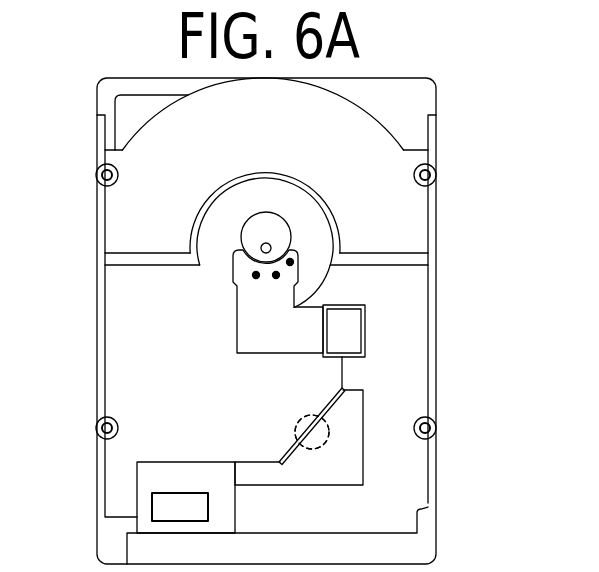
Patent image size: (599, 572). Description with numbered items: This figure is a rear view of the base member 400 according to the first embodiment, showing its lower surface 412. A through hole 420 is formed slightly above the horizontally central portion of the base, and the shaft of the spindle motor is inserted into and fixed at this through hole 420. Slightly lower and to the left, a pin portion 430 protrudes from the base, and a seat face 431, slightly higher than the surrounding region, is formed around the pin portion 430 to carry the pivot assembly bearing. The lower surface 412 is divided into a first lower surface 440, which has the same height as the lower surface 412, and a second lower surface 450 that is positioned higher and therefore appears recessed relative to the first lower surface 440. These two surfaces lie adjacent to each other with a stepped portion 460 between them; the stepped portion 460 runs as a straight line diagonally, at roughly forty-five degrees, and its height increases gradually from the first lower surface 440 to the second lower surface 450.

The base member 400 is at (465, 113).
The lower surface 412 is at (192, 332).
The through hole 420 is at (267, 247).
The pin portion 430 is at (302, 420).
The seat face 431 is at (328, 424).
The first lower surface 440 is at (117, 363).
The second lower surface 450 is at (347, 476).
The stepped portion 460 is at (287, 455).